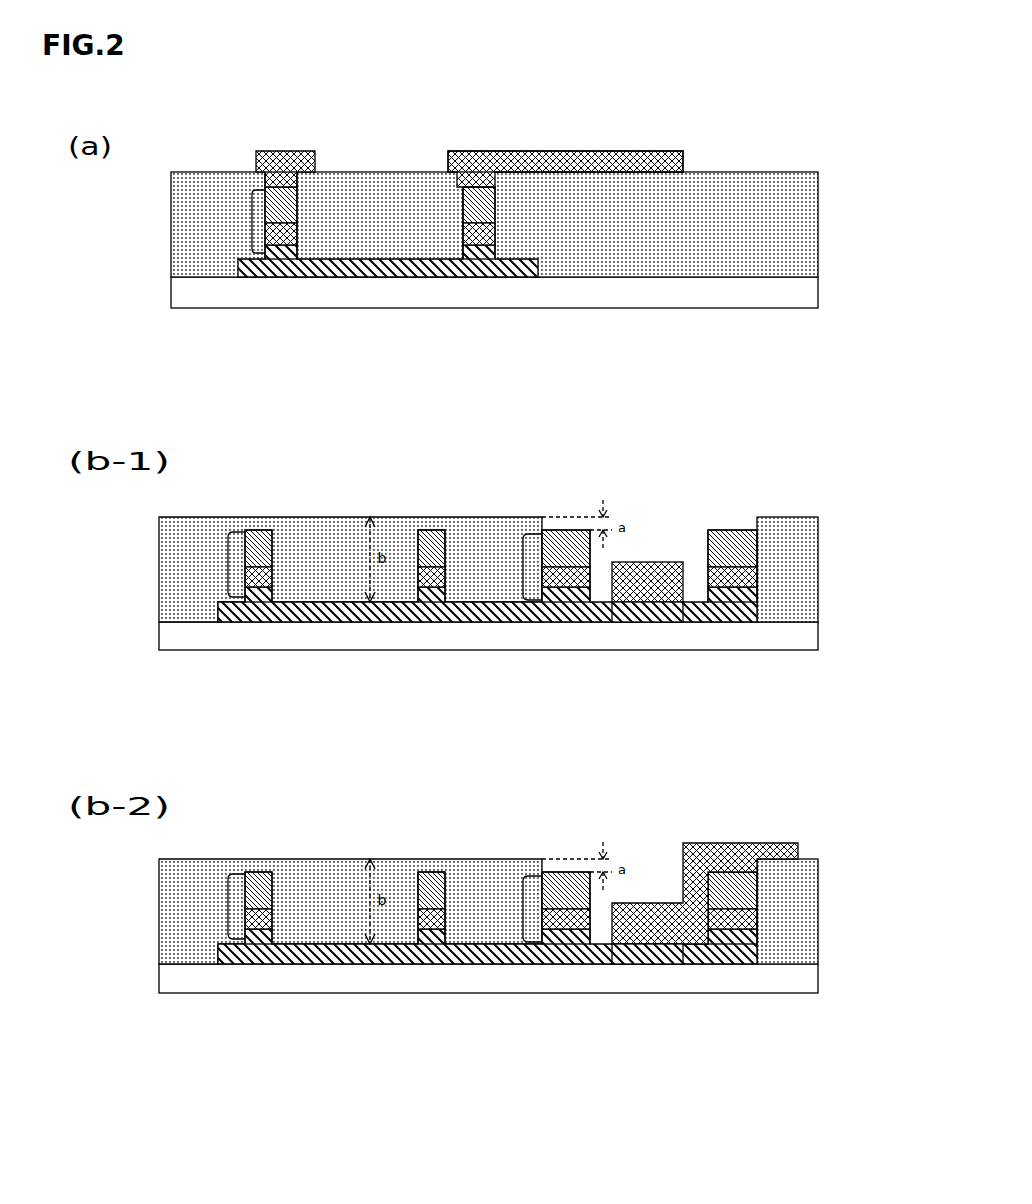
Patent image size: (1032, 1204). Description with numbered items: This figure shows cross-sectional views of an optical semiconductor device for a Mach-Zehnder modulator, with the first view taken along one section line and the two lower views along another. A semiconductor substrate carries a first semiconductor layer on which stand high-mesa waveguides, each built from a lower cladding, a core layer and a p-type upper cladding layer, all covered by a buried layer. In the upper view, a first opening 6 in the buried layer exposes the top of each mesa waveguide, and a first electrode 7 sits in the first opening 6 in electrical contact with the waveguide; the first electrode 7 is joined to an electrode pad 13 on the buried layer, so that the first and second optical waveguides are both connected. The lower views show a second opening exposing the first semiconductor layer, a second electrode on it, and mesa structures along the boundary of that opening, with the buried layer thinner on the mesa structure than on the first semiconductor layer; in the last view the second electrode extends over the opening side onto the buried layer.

The first opening 6 is at (463, 188).
The first electrode 7 is at (265, 187).
The electrode pad 13 is at (655, 160).